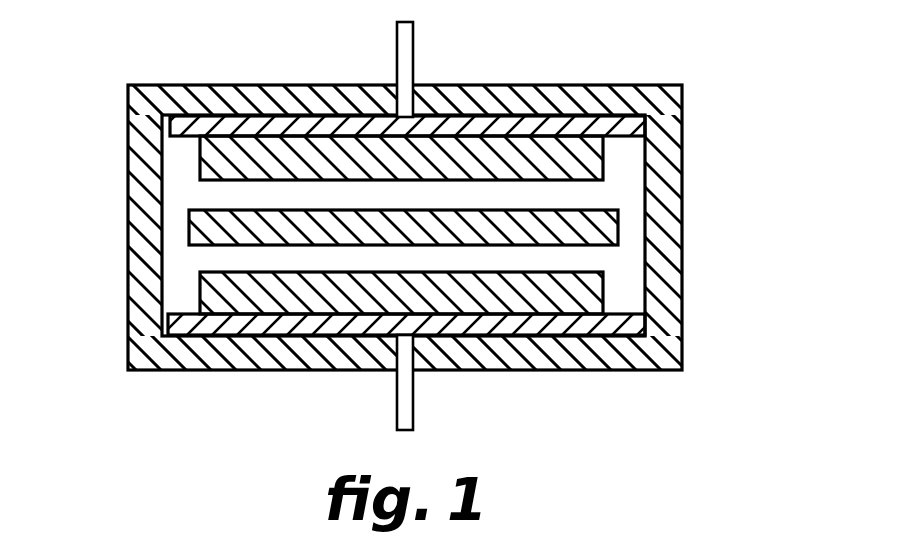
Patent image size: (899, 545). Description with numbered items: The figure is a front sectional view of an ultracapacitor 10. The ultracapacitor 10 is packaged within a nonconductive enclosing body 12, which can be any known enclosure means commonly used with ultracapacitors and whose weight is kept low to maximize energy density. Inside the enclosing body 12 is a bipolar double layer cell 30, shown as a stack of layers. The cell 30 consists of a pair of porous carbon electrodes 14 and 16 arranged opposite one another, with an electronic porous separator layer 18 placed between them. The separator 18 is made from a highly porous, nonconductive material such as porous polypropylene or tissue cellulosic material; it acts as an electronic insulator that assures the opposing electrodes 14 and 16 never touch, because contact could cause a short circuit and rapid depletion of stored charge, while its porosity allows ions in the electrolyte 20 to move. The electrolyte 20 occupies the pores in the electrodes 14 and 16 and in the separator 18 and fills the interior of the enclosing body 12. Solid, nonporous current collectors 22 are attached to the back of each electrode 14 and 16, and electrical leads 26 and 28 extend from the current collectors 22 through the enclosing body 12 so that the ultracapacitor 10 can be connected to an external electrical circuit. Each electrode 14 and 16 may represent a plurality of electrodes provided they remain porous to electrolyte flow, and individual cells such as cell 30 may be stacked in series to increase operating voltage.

The ultracapacitor 10 is at (448, 243).
The nonconductive enclosing body 12 is at (145, 328).
The carbon electrode 14 is at (592, 159).
The carbon electrode 16 is at (597, 284).
The electronic porous separator layer 18 is at (600, 225).
The electrolyte 20 is at (181, 160).
The current collector 22 is at (637, 121).
The electrical lead 26 is at (414, 33).
The electrical lead 28 is at (414, 395).
The bipolar double layer cell 30 is at (428, 211).